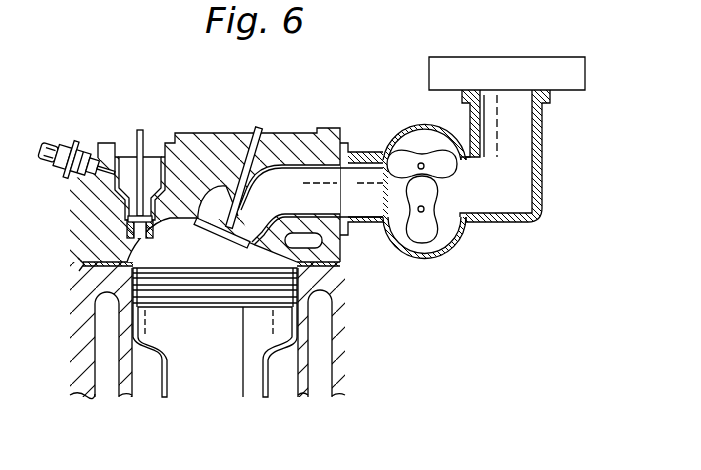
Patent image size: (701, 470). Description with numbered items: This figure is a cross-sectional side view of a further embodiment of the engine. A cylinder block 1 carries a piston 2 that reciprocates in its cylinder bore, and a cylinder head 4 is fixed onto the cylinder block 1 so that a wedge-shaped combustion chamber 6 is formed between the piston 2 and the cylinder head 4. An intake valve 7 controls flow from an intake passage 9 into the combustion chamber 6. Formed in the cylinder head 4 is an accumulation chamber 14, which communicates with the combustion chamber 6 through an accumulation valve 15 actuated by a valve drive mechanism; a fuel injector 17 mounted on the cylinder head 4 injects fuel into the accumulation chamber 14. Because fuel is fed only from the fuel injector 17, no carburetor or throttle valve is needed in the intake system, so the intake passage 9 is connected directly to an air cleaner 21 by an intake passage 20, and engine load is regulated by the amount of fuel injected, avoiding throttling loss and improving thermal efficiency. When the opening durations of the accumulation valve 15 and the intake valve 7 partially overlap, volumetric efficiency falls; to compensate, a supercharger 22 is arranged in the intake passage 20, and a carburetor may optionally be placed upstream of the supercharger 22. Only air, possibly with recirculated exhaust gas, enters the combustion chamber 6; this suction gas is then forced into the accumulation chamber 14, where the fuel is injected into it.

The cylinder block 1 is at (332, 352).
The piston 2 is at (243, 385).
The cylinder head 4 is at (190, 143).
The combustion chamber 6 is at (196, 255).
The intake valve 7 is at (259, 130).
The intake passage 9 is at (303, 203).
The accumulation chamber 14 is at (153, 163).
The accumulation valve 15 is at (133, 168).
The fuel injector 17 is at (57, 142).
The intake passage 20 is at (518, 203).
The air cleaner 21 is at (561, 91).
The supercharger 22 is at (424, 266).